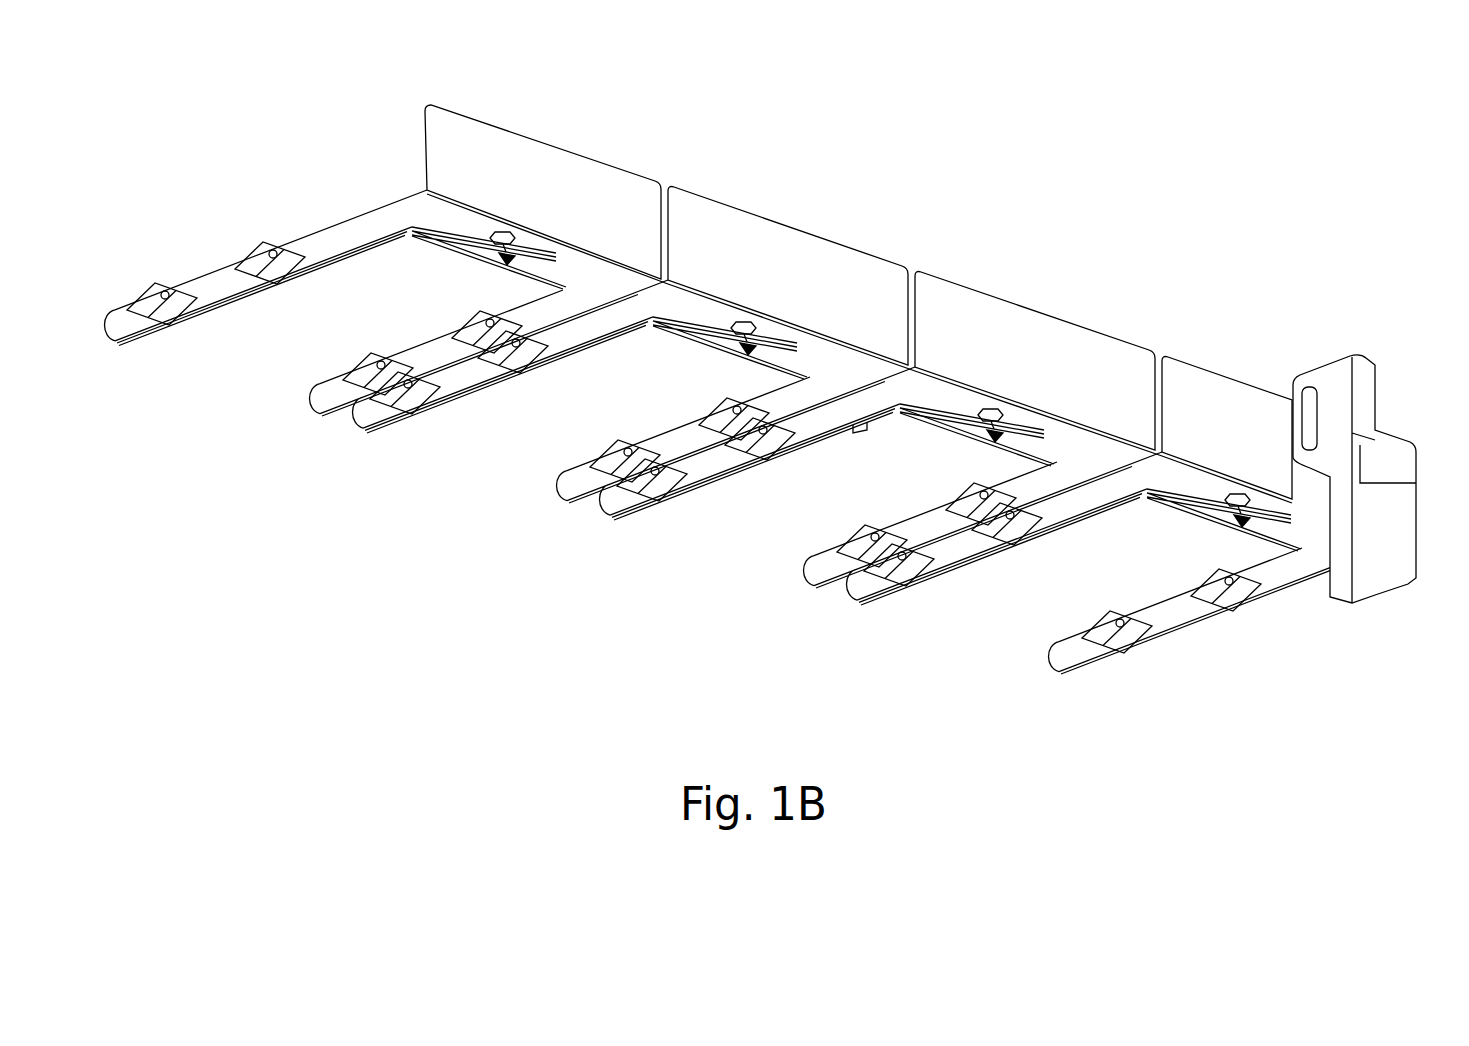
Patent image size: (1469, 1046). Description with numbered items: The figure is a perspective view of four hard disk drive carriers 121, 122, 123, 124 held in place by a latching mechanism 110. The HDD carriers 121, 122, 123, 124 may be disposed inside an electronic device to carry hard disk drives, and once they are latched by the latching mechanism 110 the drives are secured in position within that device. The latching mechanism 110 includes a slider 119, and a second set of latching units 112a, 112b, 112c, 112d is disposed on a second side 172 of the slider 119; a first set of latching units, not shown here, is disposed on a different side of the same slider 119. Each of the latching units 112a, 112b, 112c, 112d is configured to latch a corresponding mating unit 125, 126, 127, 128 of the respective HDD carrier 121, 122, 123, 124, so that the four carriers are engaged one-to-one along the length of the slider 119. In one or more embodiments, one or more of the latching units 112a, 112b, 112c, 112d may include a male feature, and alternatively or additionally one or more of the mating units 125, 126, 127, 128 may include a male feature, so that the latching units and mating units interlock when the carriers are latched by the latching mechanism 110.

The latching mechanism 110 is at (1400, 586).
The latching unit 112a is at (490, 236).
The latching unit 112b is at (742, 325).
The latching unit 112c is at (988, 412).
The latching unit 112d is at (1237, 496).
The HDD carrier 121 is at (515, 158).
The HDD carrier 122 is at (765, 238).
The HDD carrier 123 is at (1008, 320).
The HDD carrier 124 is at (1230, 398).
The mating unit 125 is at (506, 260).
The mating unit 126 is at (752, 345).
The mating unit 127 is at (1034, 423).
The mating unit 128 is at (1245, 500).
The second side 172 is at (1007, 420).
The slider 119 is at (987, 434).